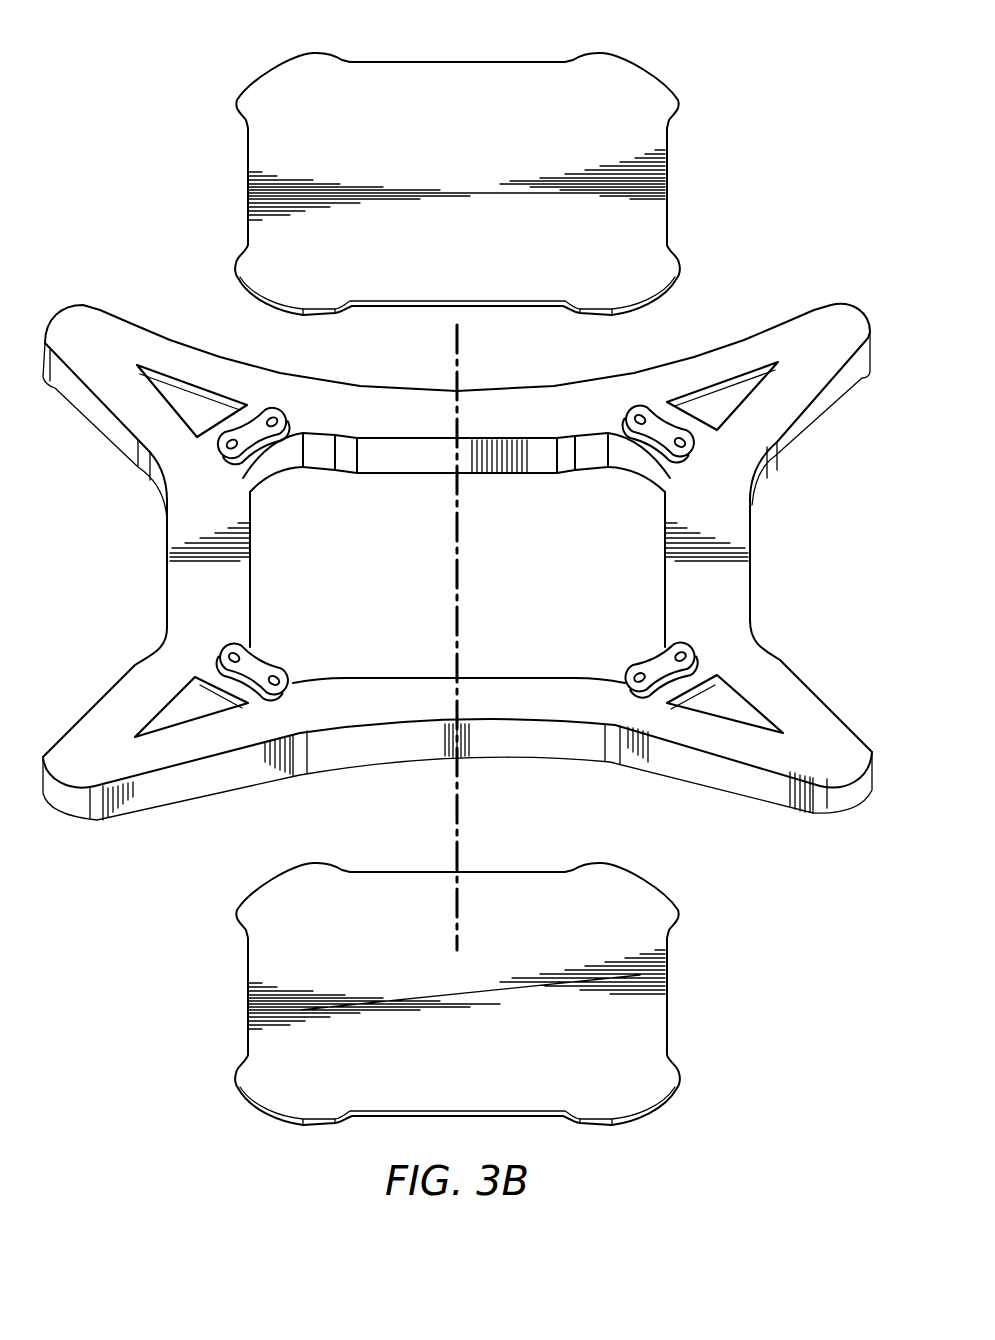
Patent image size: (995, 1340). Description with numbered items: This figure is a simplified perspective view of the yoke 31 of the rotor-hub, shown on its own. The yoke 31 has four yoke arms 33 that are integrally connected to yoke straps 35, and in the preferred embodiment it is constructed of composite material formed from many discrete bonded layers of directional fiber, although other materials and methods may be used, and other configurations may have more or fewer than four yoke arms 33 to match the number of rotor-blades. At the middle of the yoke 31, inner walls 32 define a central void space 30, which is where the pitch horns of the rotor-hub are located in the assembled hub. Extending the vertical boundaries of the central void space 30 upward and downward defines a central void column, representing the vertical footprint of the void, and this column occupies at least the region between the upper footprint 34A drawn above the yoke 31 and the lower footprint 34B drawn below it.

The central void space 30 is at (536, 500).
The yoke 31 is at (121, 292).
The inner walls 32 is at (407, 465).
The yoke arms 33 is at (165, 347).
The upper footprint 34A is at (417, 75).
The lower footprint 34B is at (418, 883).
The yoke straps 35 is at (418, 398).